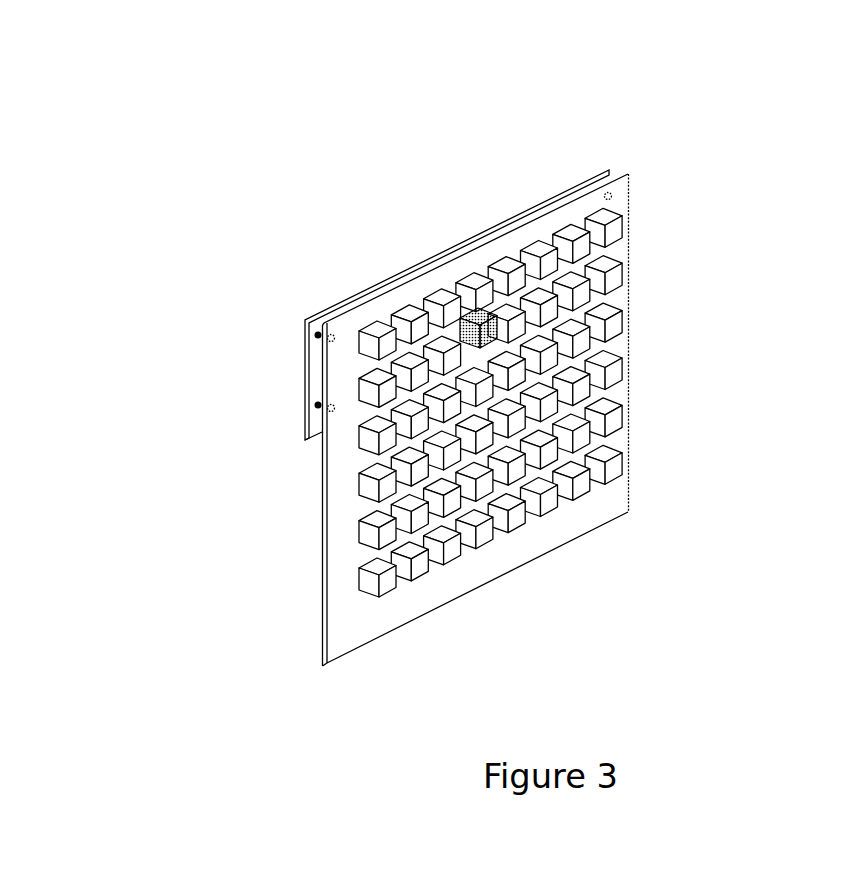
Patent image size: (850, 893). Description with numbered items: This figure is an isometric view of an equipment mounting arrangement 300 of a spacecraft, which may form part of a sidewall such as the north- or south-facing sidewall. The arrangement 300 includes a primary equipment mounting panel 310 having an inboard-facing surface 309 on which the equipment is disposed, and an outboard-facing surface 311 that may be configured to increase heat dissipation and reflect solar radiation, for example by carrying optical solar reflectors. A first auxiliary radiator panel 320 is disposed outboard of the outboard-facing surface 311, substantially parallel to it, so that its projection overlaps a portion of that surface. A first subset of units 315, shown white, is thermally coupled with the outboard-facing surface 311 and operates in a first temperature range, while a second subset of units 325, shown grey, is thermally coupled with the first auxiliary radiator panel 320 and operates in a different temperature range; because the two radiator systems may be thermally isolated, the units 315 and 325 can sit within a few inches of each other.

The equipment mounting arrangement 300 is at (172, 50).
The inboard-facing surface 309 is at (577, 516).
The primary equipment mounting panel 310 is at (702, 364).
The outboard-facing surface 311 is at (296, 578).
The first subset of units 315 is at (378, 326).
The first auxiliary radiator panel 320 is at (303, 337).
The second subset of units 325 is at (499, 316).